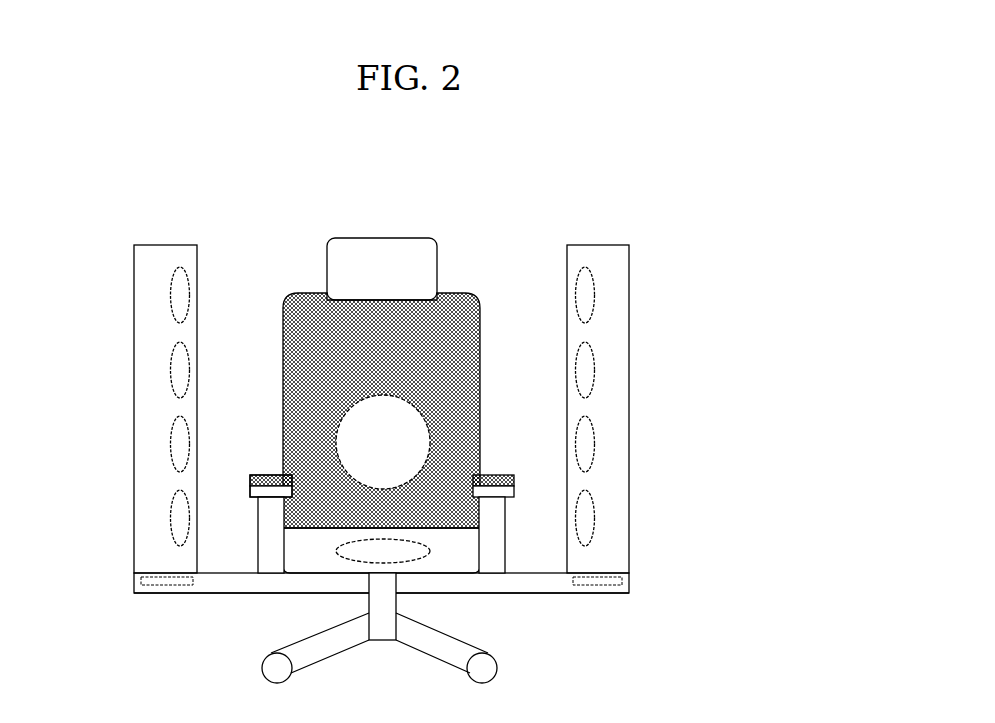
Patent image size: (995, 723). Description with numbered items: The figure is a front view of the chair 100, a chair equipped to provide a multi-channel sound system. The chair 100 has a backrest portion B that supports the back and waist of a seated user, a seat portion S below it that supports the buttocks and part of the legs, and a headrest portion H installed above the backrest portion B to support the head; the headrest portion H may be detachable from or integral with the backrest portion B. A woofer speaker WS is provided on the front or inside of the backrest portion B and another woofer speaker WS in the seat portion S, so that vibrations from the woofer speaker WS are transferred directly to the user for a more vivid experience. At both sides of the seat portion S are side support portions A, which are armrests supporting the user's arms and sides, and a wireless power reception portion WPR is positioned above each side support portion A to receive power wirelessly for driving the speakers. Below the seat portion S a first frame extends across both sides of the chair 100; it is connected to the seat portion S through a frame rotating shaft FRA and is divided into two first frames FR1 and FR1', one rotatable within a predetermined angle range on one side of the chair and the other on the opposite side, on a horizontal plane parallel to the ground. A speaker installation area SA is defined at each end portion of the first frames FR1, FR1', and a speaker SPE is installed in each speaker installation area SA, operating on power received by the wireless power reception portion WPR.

The chair 100 is at (624, 153).
The speaker SPE is at (617, 326).
The speaker installation area SA is at (629, 576).
The headrest portion H is at (425, 258).
The backrest portion B is at (303, 300).
The woofer speaker WS is at (420, 428).
The seat portion S is at (291, 550).
The wireless power reception portion WPR is at (262, 475).
The side support portion A is at (251, 488).
The frame rotating shaft FRA is at (378, 588).
The first frame FR1' is at (251, 638).
The first frame FR1 is at (512, 635).